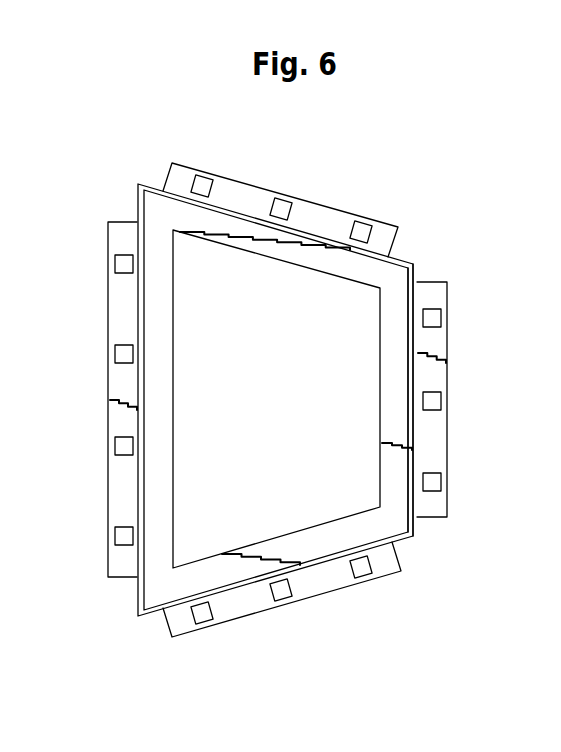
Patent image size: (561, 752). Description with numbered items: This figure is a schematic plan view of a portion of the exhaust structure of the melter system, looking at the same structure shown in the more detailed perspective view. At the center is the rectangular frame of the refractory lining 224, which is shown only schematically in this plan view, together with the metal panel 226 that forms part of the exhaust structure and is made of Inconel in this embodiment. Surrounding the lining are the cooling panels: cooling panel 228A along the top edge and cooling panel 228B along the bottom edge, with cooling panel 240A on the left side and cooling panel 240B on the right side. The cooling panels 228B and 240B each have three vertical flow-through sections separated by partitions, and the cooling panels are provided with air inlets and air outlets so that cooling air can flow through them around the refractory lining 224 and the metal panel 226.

The refractory lining 224 is at (160, 217).
The metal panel 226 is at (418, 265).
The cooling panel 228A is at (318, 203).
The cooling panel 228B is at (290, 603).
The cooling panel 240A is at (108, 416).
The cooling panel 240B is at (448, 429).